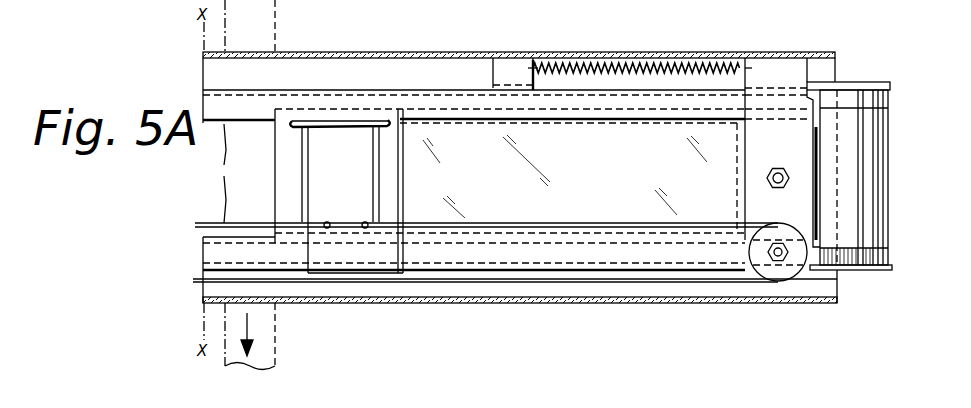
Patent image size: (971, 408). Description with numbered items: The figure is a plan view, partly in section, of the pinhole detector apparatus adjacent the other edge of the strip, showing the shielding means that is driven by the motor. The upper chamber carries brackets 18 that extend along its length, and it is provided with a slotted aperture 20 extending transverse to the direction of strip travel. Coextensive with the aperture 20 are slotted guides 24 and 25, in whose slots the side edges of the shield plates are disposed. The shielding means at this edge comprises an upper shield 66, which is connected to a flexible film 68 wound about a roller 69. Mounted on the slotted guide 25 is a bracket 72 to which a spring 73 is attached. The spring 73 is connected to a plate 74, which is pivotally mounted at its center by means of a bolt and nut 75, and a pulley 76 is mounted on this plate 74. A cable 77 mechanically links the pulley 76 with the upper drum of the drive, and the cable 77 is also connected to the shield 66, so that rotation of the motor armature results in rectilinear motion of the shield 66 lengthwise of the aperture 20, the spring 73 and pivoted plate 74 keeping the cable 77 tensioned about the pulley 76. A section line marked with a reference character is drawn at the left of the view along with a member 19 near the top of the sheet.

The brackets 18 is at (431, 52).
The support member 19 is at (275, 4).
The slotted aperture 20 is at (203, 179).
The slotted guide 24 is at (598, 240).
The slotted guide 25 is at (385, 97).
The upper shield 66 is at (350, 185).
The flexible film 68 is at (597, 171).
The roller 69 is at (890, 100).
The bracket 72 is at (504, 62).
The spring 73 is at (609, 60).
The plate 74 is at (745, 186).
The bolt and nut 75 is at (778, 167).
The pulley 76 is at (783, 278).
The cable 77 is at (508, 224).